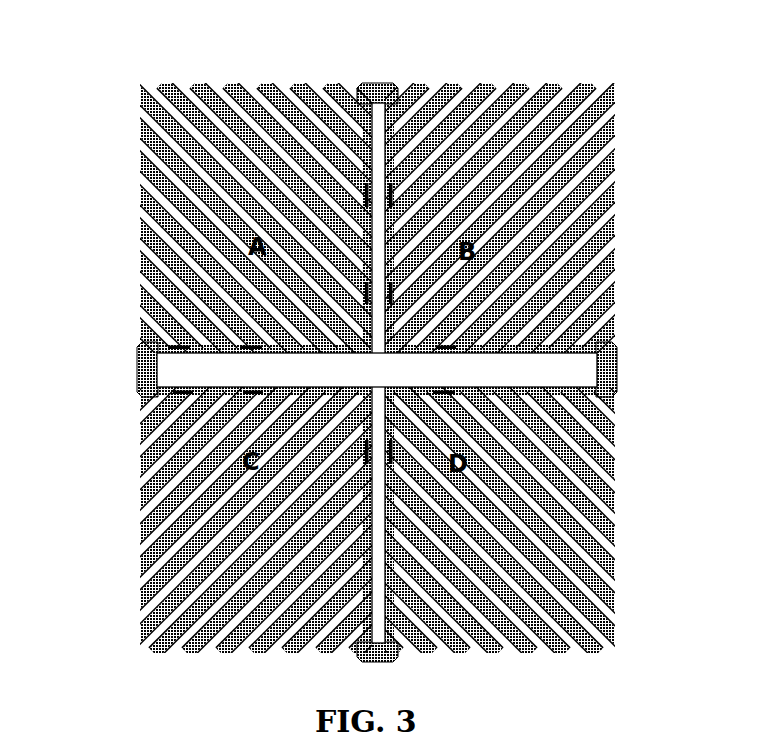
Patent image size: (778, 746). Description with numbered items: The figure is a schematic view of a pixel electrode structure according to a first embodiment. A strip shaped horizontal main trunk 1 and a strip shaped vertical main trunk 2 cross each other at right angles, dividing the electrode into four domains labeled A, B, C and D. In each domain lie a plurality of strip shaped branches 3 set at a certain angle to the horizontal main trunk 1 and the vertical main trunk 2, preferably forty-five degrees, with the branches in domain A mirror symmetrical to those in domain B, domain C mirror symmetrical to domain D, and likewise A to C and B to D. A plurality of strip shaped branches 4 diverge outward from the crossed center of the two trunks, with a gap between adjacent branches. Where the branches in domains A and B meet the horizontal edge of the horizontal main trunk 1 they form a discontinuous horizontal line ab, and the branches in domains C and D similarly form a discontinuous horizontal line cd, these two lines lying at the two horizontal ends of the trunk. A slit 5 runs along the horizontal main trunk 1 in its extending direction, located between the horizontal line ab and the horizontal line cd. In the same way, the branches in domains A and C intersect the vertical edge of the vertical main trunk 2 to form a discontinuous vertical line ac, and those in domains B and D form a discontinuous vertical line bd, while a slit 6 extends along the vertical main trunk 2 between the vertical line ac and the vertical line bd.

The horizontal main trunk 1 is at (603, 387).
The vertical main trunk 2 is at (372, 88).
The strip shaped branches 3 is at (563, 140).
The strip shaped branches 4 is at (598, 162).
The slit 5 is at (591, 352).
The slit 6 is at (379, 112).
The horizontal line ab is at (177, 344).
The horizontal line cd is at (180, 393).
The vertical line ac is at (367, 195).
The vertical line bd is at (391, 187).